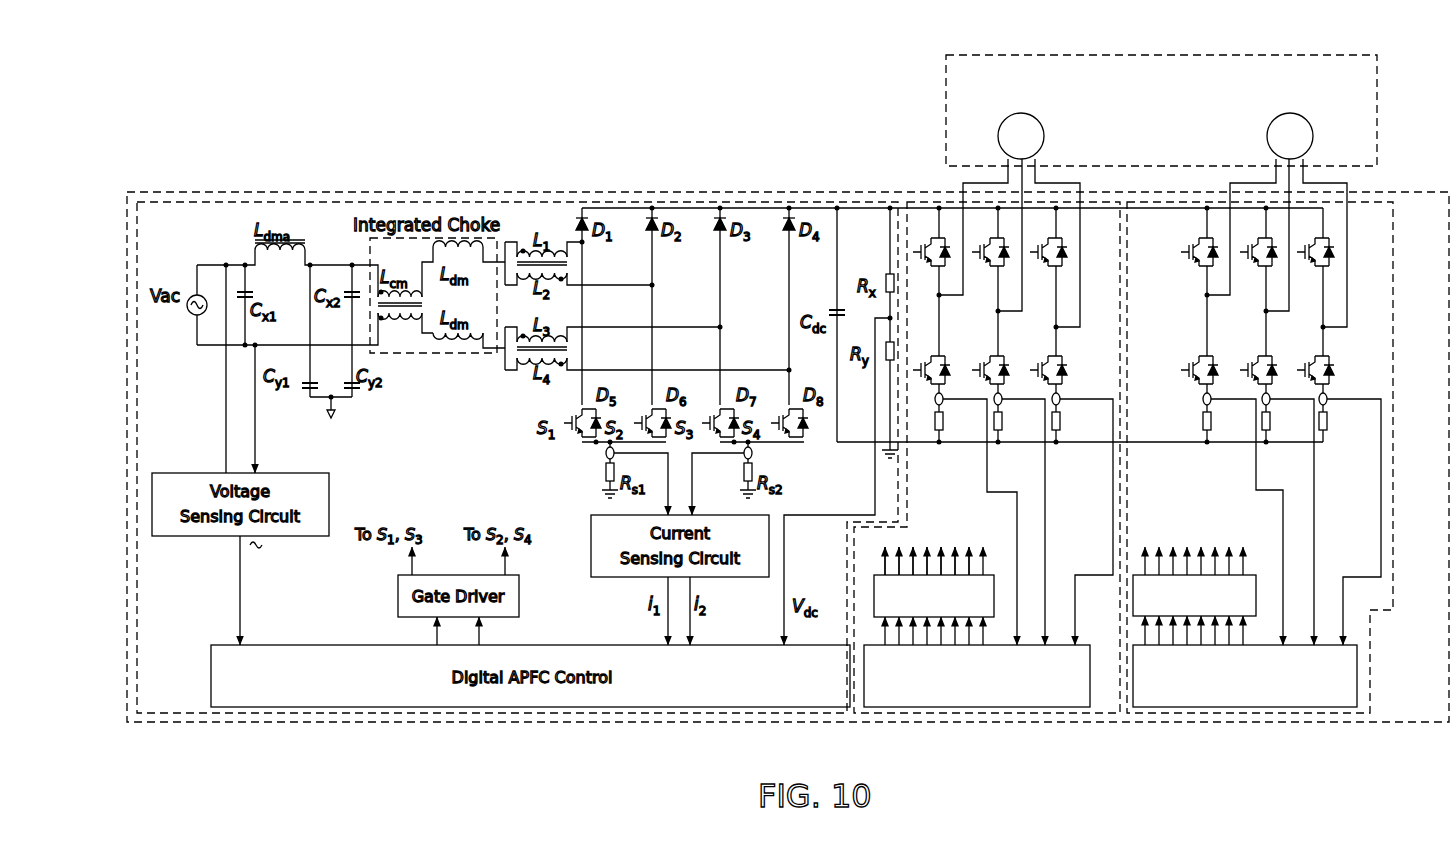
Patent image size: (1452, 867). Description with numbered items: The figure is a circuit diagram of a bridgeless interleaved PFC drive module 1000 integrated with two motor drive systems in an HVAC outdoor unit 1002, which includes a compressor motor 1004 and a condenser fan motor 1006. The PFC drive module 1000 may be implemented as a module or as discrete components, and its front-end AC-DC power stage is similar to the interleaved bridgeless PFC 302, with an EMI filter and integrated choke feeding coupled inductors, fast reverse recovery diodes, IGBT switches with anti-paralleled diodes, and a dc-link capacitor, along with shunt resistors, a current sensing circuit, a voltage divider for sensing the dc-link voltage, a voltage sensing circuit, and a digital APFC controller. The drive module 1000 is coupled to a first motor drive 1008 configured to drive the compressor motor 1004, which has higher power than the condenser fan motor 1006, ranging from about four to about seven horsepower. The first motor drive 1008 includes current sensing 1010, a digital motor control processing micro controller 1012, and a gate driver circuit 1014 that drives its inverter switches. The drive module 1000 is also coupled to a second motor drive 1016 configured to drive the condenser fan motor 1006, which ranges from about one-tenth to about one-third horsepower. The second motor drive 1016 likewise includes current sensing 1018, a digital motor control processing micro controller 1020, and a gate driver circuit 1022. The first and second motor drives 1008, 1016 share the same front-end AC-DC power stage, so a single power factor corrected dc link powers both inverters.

The bridgeless interleaved PFC drive module 1000 is at (385, 722).
The interleaved bridgeless PFC 302 is at (531, 722).
The HVAC outdoor unit 1002 is at (1161, 94).
The compressor motor 1004 is at (1044, 136).
The condenser fan motor 1006 is at (1267, 136).
The first motor drive 1008 is at (946, 200).
The current sensing 1010 is at (1084, 602).
The digital motor control processing micro controller 1012 is at (960, 708).
The gate driver circuit 1014 is at (874, 580).
The second motor drive 1016 is at (1378, 200).
The current sensing 1018 is at (1349, 605).
The digital motor control processing micro controller 1020 is at (1240, 708).
The gate driver circuit 1022 is at (1253, 575).